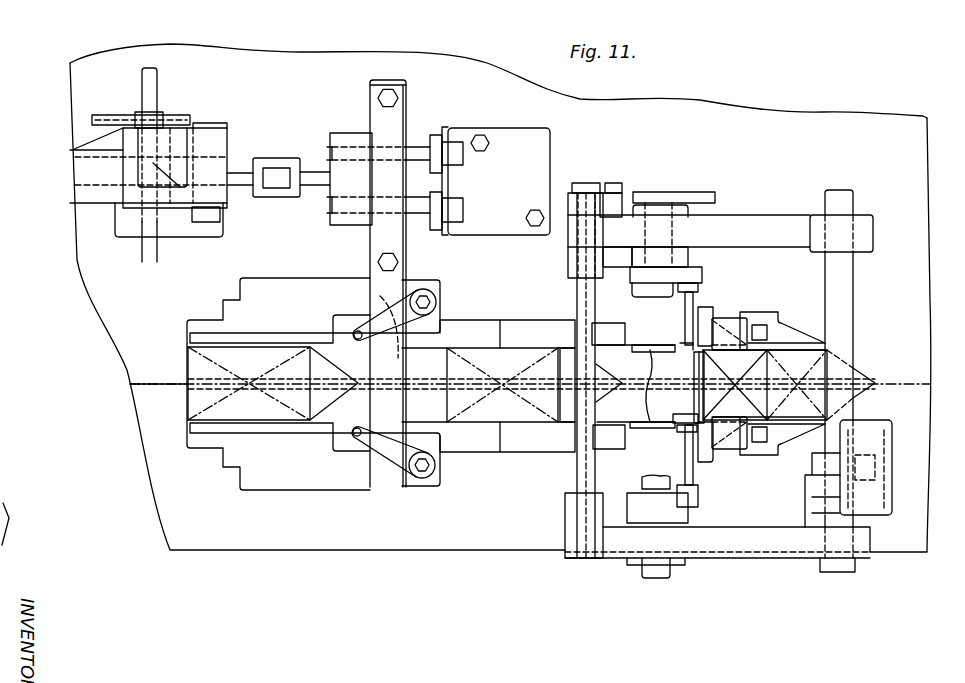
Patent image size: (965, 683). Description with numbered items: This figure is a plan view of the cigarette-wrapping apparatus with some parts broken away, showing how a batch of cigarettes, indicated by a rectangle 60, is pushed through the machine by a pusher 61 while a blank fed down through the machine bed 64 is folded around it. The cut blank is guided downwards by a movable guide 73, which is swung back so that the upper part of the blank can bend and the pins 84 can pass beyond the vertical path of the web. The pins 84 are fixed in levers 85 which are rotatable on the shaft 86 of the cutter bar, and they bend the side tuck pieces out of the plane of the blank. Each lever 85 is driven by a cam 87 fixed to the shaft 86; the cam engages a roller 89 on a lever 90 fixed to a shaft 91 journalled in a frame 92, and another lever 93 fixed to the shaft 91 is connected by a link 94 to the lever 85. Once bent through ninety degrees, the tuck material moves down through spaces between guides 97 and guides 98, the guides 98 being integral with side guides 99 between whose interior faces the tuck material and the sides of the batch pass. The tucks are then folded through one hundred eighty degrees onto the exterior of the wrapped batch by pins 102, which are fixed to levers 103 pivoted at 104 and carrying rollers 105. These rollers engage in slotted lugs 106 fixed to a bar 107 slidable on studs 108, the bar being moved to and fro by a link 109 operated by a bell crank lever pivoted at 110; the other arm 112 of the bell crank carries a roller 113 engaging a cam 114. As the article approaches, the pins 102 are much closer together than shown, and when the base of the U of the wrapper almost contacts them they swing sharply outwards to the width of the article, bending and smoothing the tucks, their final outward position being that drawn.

The rectangle 60 is at (837, 357).
The pusher 61 is at (858, 375).
The machine bed 64 is at (829, 119).
The movable guide 73 is at (752, 363).
The pins 84 is at (693, 302).
The levers 85 is at (692, 273).
The shaft 86 is at (650, 287).
The cam 87 is at (702, 195).
The roller 89 is at (613, 197).
The lever 90 is at (585, 205).
The shaft 91 is at (583, 293).
The frame 92 is at (782, 532).
The lever 93 is at (568, 260).
The link 94 is at (618, 262).
The guides 97 is at (688, 415).
The guides 98 is at (682, 427).
The side guides 99 is at (628, 432).
The pins 102 is at (357, 428).
The levers 103 is at (359, 340).
The pivot 104 is at (437, 298).
The rollers 105 is at (380, 297).
The slotted lugs 106 is at (398, 355).
The bar 107 is at (378, 243).
The studs 108 is at (420, 202).
The link 109 is at (242, 182).
The pivot 110 is at (225, 125).
The arm 112 is at (178, 133).
The roller 113 is at (153, 119).
The cam 114 is at (226, 123).